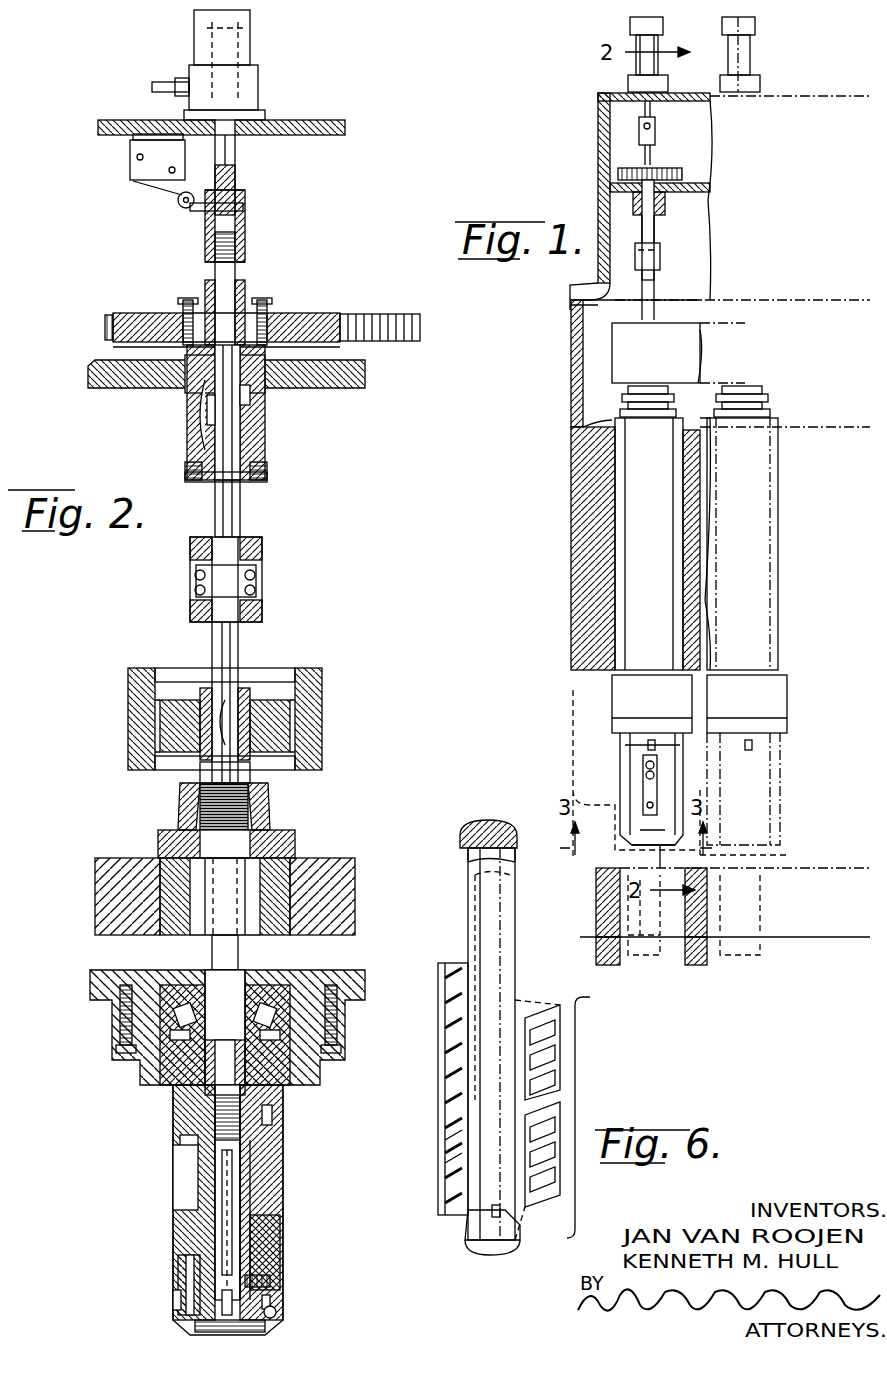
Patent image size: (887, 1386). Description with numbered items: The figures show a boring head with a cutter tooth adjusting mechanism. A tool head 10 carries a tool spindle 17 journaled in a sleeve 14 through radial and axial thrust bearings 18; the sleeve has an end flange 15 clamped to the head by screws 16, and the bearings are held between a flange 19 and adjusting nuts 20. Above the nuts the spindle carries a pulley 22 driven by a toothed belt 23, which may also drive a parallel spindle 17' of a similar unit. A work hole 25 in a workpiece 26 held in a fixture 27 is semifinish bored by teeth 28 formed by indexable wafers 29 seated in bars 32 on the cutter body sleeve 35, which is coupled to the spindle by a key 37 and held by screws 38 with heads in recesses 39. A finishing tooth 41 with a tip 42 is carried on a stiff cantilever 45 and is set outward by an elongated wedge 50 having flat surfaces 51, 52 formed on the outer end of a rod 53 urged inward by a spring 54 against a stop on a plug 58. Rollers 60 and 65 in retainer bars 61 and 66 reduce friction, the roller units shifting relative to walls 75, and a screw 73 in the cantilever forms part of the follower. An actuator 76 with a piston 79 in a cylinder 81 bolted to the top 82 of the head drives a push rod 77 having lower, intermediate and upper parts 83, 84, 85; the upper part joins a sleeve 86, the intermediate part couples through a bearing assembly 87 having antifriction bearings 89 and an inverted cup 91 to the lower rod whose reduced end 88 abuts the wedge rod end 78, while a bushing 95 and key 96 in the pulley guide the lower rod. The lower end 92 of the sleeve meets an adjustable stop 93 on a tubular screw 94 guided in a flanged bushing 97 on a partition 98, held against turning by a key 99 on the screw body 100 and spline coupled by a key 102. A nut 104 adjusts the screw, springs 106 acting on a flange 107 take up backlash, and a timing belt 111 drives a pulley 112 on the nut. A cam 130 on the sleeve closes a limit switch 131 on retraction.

In FIG. 2, the tool head 10 is at (93, 962).
In FIG. 1, the tool head 10 is at (570, 490).
In FIG. 2, the sleeve 14 is at (280, 935).
In FIG. 1, the sleeve 14 is at (696, 544).
In FIG. 2, the end flange 15 is at (112, 1040).
In FIG. 1, the end flange 15 is at (699, 704).
In FIG. 2, the screws 16 is at (125, 1070).
In FIG. 2, the tool spindle 17 is at (170, 1210).
In FIG. 1, the tool spindle 17 is at (599, 779).
In FIG. 1, the parallel spindle 17' is at (784, 789).
In FIG. 2, the radial and axial thrust bearings 18 is at (295, 845).
In FIG. 2, the flange 19 is at (300, 1045).
In FIG. 2, the adjusting nuts 20 is at (268, 795).
In FIG. 2, the pulley 22 is at (318, 672).
In FIG. 1, the pulley 22 is at (625, 396).
In FIG. 2, the toothed belt 23 is at (322, 702).
In FIG. 1, the toothed belt 23 is at (678, 353).
In FIG. 1, the work hole 25 is at (610, 885).
In FIG. 1, the workpiece 26 is at (598, 915).
In FIG. 1, the fixture 27 is at (596, 942).
In FIG. 2, the teeth 28 is at (193, 1322).
In FIG. 1, the teeth 28 is at (622, 835).
In FIG. 2, the indexable wafers 29 is at (175, 1300).
In FIG. 2, the bars 32 is at (180, 1285).
In FIG. 2, the sleeve (cutter body) 35 is at (205, 1182).
In FIG. 2, the key 37 is at (272, 1115).
In FIG. 2, the screws 38 is at (180, 1142).
In FIG. 2, the recesses 39 is at (175, 1172).
In FIG. 2, the finishing tooth 41 is at (272, 1300).
In FIG. 1, the finishing tooth 41 is at (657, 815).
In FIG. 2, the tooth tip 42 is at (277, 1318).
In FIG. 2, the cantilever 45 is at (280, 1250).
In FIG. 2, the wedge 50 is at (237, 1225).
In FIG. 6, the wedge 50 is at (476, 1245).
In FIG. 6, the flat surface 51 is at (468, 920).
In FIG. 6, the flat surface 52 is at (486, 932).
In FIG. 2, the rod 53 is at (235, 1200).
In FIG. 6, the rod 53 is at (478, 822).
In FIG. 2, the spring 54 is at (245, 1140).
In FIG. 2, the plug 58 is at (262, 1005).
In FIG. 6, the rollers 60 is at (448, 975).
In FIG. 6, the retainer bar 61 is at (445, 1150).
In FIG. 6, the rollers 65 is at (558, 1045).
In FIG. 6, the retainer bar 66 is at (560, 1015).
In FIG. 2, the screw 73 is at (268, 1282).
In FIG. 6, the walls 75 is at (500, 1213).
In FIG. 2, the actuator 76 is at (185, 40).
In FIG. 1, the actuator 76 is at (628, 25).
In FIG. 2, the push rod 77 is at (205, 520).
In FIG. 1, the push rod 77 is at (635, 225).
In FIG. 2, the inner end of wedge rod 78 is at (215, 1075).
In FIG. 2, the piston 79 is at (250, 25).
In FIG. 2, the cylinder 81 is at (258, 45).
In FIG. 1, the cylinder 81 is at (660, 48).
In FIG. 2, the top of the head 82 is at (275, 130).
In FIG. 1, the top of the head 82 is at (618, 93).
In FIG. 2, the lower push rod part 83 is at (215, 646).
In FIG. 1, the lower push rod part 83 is at (656, 292).
In FIG. 2, the intermediate push rod part 84 is at (236, 498).
In FIG. 1, the intermediate push rod part 84 is at (655, 230).
In FIG. 2, the upper push rod part 85 is at (235, 152).
In FIG. 2, the sleeve 86 is at (245, 216).
In FIG. 1, the sleeve 86 is at (639, 130).
In FIG. 2, the bearing assembly 87 is at (190, 580).
In FIG. 1, the bearing assembly 87 is at (660, 255).
In FIG. 2, the reduced lower end 88 is at (240, 972).
In FIG. 2, the antifriction bearings 89 is at (256, 588).
In FIG. 2, the inverted cup 91 is at (262, 545).
In FIG. 2, the lower end of sleeve 92 is at (208, 263).
In FIG. 2, the stop 93 is at (240, 282).
In FIG. 2, the tubular screw 94 is at (245, 296).
In FIG. 2, the bushing 95 is at (212, 690).
In FIG. 2, the key 96 is at (236, 690).
In FIG. 2, the flanged bushing 97 is at (192, 400).
In FIG. 2, the partition 98 is at (360, 385).
In FIG. 1, the partition 98 is at (700, 186).
In FIG. 2, the key 99 is at (250, 398).
In FIG. 2, the screw body 100 is at (262, 440).
In FIG. 2, the key 102 is at (205, 420).
In FIG. 2, the nut 104 is at (188, 302).
In FIG. 2, the springs 106 is at (188, 470).
In FIG. 2, the flange 107 is at (262, 480).
In FIG. 2, the timing belt 111 is at (105, 322).
In FIG. 2, the pulley 112 is at (300, 318).
In FIG. 1, the pulley 112 is at (668, 168).
In FIG. 2, the cam 130 is at (205, 214).
In FIG. 2, the limit switch 131 is at (140, 192).